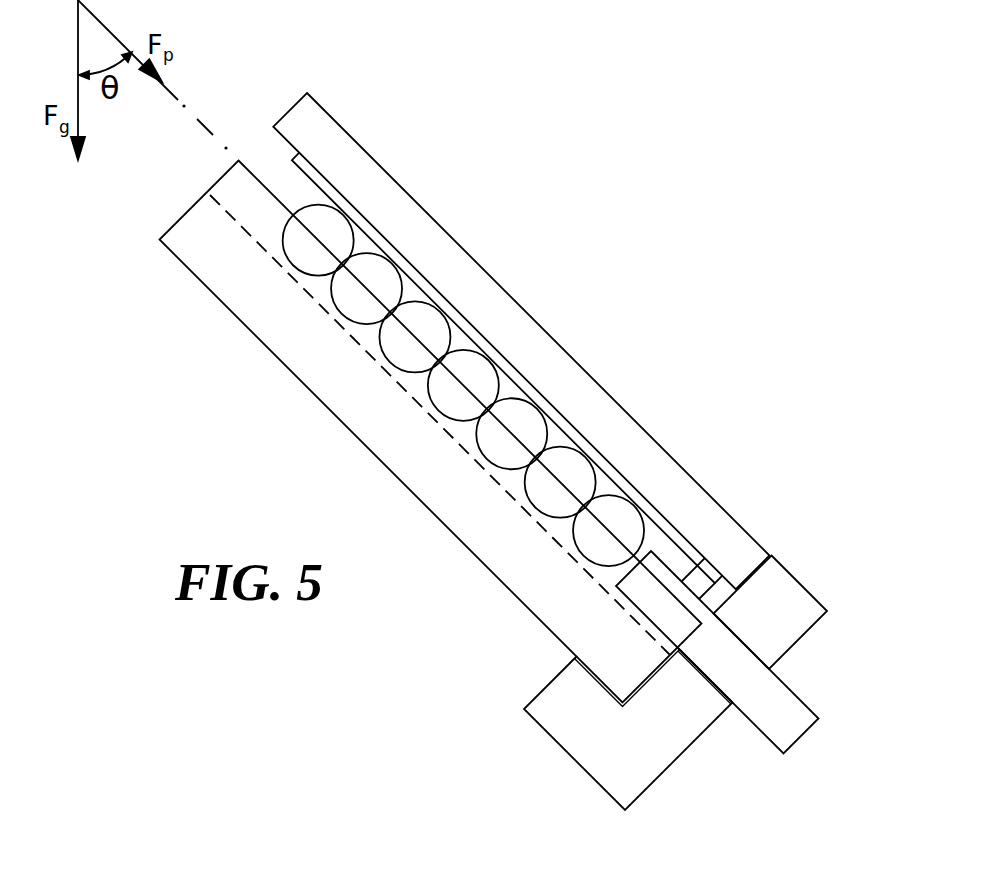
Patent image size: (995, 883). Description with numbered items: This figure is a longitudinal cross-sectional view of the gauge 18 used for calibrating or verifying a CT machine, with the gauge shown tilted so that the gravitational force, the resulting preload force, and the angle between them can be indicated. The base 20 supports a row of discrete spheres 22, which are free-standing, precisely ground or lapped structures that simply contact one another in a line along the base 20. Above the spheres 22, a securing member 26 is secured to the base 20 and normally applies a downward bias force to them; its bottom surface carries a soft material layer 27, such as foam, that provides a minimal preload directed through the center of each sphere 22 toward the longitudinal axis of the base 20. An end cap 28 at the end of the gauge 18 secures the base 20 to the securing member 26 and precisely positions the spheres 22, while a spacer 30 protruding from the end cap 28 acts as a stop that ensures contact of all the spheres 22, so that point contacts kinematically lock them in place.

The gauge 18 is at (652, 205).
The base 20 is at (221, 276).
The spheres 22 is at (478, 372).
The securing member 26 is at (335, 130).
The soft material layer 27 is at (294, 161).
The end cap 28 is at (783, 588).
The spacer 30 is at (683, 579).